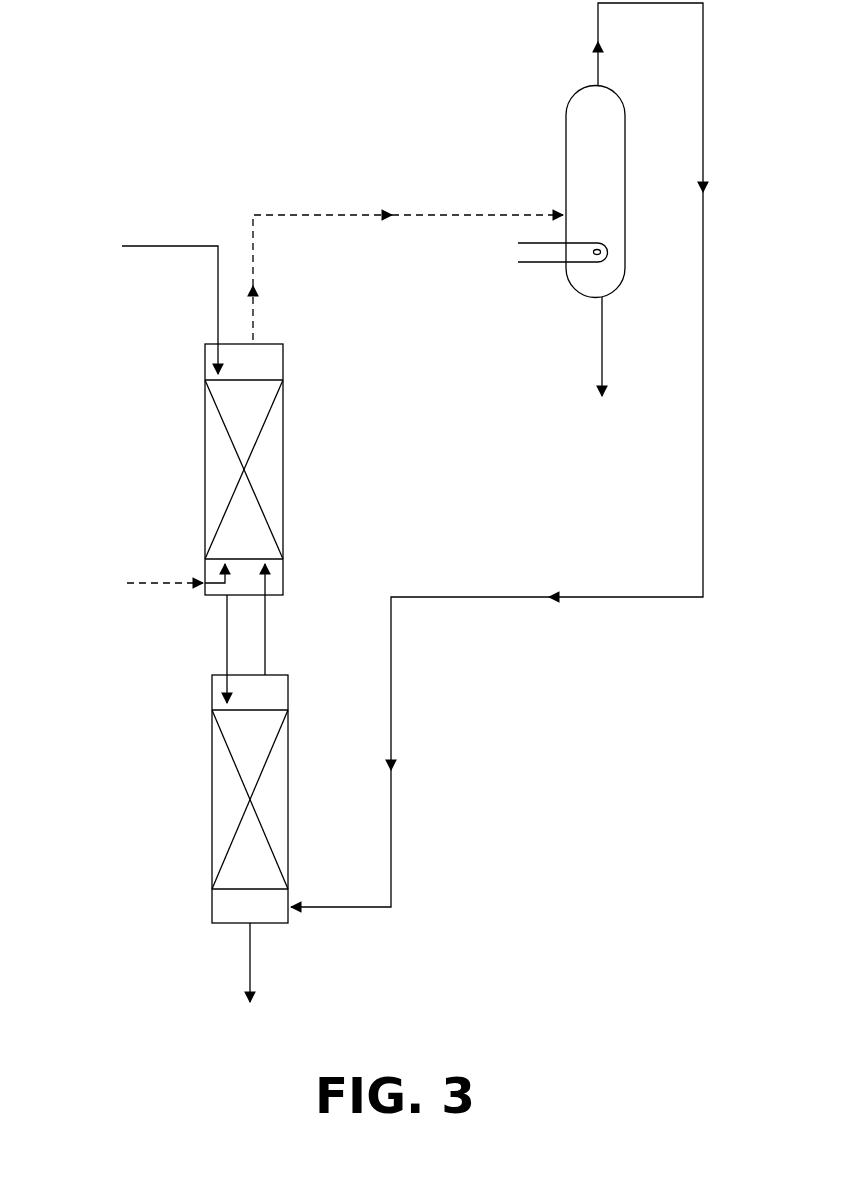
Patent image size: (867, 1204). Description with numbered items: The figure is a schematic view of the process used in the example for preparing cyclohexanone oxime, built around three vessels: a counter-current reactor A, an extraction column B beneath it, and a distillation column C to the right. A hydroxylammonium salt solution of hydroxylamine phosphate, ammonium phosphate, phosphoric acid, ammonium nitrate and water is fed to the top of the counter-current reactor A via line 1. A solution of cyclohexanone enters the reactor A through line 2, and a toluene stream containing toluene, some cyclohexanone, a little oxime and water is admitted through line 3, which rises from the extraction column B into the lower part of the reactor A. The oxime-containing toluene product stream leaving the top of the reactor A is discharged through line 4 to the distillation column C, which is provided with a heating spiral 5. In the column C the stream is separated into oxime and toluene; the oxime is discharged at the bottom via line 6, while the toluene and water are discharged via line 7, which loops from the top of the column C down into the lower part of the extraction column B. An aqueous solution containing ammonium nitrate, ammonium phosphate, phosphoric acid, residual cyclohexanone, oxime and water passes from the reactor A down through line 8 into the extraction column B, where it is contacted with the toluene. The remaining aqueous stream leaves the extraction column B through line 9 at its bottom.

The line 1 is at (132, 246).
The line 2 is at (140, 583).
The line 3 is at (266, 623).
The line 4 is at (458, 215).
The heating spiral 5 is at (534, 262).
The line 6 is at (603, 333).
The line 7 is at (703, 415).
The line 8 is at (226, 623).
The product outlet of reactor B 9 is at (251, 957).
The counter-current reactor A is at (285, 463).
The extraction column B is at (290, 790).
The distillation column C is at (626, 180).